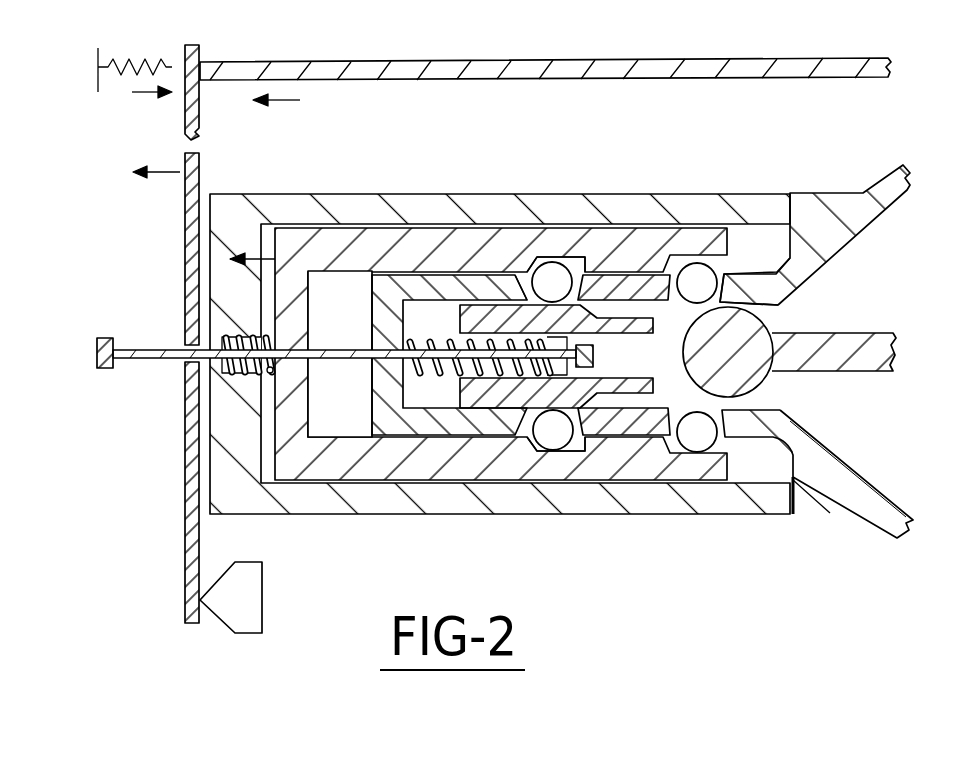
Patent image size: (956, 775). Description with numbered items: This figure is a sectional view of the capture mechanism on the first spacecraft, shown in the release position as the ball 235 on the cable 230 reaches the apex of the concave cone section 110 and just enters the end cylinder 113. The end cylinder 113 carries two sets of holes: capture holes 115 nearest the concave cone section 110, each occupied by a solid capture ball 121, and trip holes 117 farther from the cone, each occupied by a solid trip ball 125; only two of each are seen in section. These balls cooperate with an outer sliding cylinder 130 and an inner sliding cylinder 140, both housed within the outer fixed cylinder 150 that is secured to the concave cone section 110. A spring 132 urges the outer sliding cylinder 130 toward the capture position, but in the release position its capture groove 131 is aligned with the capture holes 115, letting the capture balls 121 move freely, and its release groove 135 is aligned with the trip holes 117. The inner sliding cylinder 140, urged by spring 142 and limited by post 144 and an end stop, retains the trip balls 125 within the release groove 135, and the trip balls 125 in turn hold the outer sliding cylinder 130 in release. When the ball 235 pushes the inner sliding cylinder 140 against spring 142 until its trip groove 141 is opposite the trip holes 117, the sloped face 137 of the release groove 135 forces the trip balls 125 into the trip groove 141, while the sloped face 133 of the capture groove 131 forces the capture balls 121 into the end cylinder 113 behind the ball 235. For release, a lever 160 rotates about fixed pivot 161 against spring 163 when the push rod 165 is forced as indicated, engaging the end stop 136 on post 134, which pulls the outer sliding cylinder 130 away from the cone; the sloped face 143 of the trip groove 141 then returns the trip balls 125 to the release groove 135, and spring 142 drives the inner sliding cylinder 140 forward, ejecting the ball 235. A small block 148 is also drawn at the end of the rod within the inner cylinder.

The concave cone section 110 is at (867, 190).
The end cylinder 113 is at (372, 290).
The capture holes 115 is at (740, 285).
The trip holes 117 is at (600, 277).
The capture ball 121 is at (697, 270).
The trip ball 125 is at (545, 272).
The outer sliding cylinder 130 is at (390, 230).
The capture groove 131 is at (640, 440).
The spring 132 is at (223, 363).
The sloped face 133 is at (668, 252).
The post 134 is at (153, 350).
The release groove 135 is at (538, 455).
The end stop 136 is at (105, 338).
The sloped face 137 is at (478, 318).
The inner sliding cylinder 140 is at (468, 292).
The trip groove 141 is at (600, 322).
The spring 142 is at (456, 374).
The sloped face 143 is at (596, 390).
The post 144 is at (460, 337).
The stop block 148 is at (594, 353).
The outer fixed cylinder 150 is at (232, 205).
The lever 160 is at (185, 590).
The fixed pivot 161 is at (235, 562).
The spring 163 is at (157, 62).
The push rod 165 is at (325, 62).
The cable 230 is at (805, 333).
The ball 235 is at (792, 307).